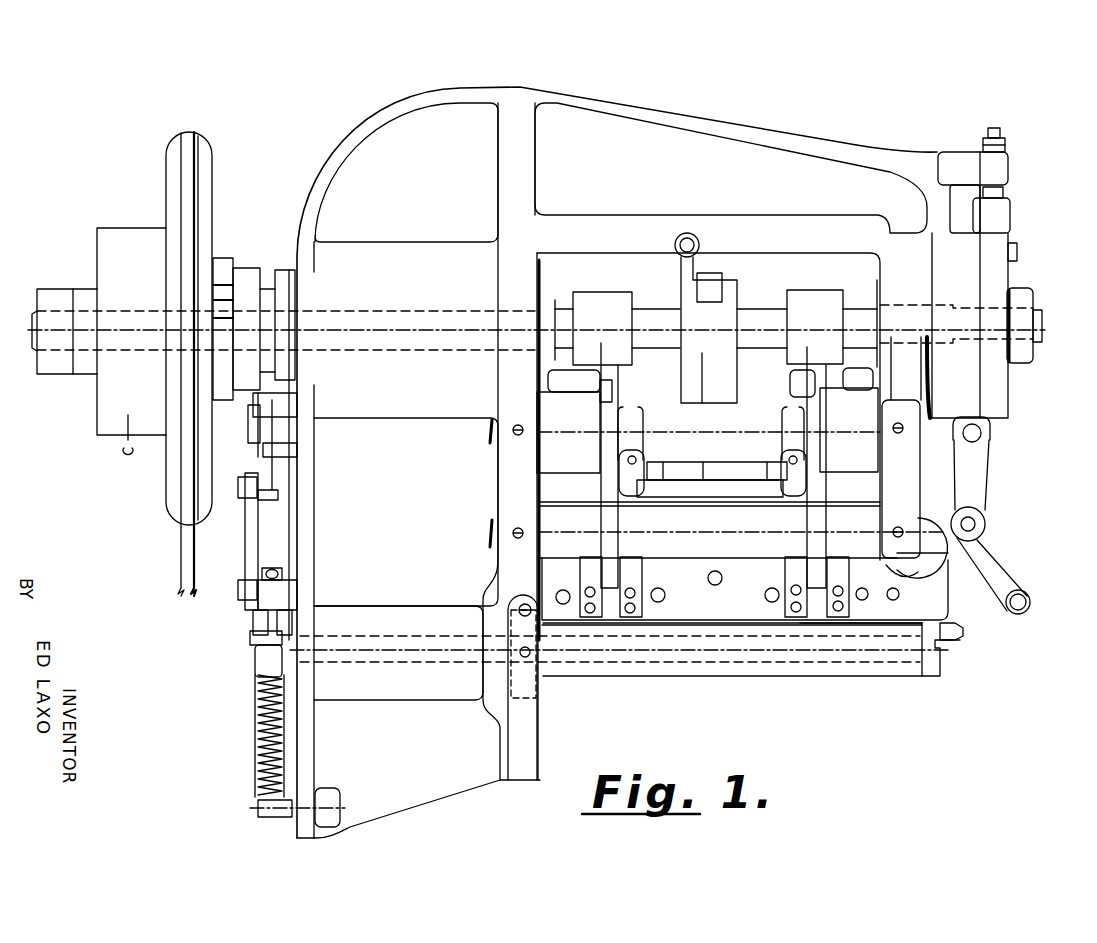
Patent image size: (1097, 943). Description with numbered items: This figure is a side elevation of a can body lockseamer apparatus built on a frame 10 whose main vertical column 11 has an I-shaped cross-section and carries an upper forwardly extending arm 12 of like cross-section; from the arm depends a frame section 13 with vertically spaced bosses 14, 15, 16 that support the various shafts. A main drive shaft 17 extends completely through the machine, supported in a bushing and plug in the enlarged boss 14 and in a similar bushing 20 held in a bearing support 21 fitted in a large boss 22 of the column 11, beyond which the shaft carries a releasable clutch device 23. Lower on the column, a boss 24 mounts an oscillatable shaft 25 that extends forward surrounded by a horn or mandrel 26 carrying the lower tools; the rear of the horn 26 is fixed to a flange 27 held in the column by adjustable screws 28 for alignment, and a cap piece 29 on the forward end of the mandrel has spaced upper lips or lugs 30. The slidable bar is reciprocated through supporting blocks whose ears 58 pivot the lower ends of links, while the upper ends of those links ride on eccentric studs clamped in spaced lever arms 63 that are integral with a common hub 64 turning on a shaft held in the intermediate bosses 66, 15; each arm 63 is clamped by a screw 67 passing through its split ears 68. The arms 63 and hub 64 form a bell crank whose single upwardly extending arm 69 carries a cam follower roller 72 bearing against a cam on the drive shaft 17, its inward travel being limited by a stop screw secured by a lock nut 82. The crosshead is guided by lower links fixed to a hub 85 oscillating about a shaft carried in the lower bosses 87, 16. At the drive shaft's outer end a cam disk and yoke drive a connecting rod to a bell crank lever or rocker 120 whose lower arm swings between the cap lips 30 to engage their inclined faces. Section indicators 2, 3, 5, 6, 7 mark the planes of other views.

The frame 10 is at (530, 88).
The main vertical column 11 is at (406, 512).
The upper forwardly extending arm 12 is at (731, 168).
The depending frame section 13 is at (975, 457).
The enlarged boss 14 is at (972, 282).
The intermediate boss 15 is at (901, 479).
The lower boss 16 is at (525, 592).
The main drive shaft 17 is at (757, 310).
The bushing 20 is at (497, 352).
The bearing support 21 is at (540, 282).
The boss 22 is at (420, 280).
The releasable clutch device 23 is at (222, 260).
The boss 24 is at (433, 690).
The oscillatable shaft 25 is at (725, 672).
The horn or mandrel 26 is at (873, 672).
The flange 27 is at (547, 688).
The adjustable screws 28 is at (523, 656).
The cap piece 29 is at (930, 676).
The upper lips or lugs 30 is at (965, 630).
The ears 58 is at (840, 582).
The lever arms 63 is at (642, 420).
The hub 64 is at (717, 454).
The intermediate boss 66 is at (518, 448).
The screw 67 is at (643, 452).
The ears 68 is at (652, 480).
The upwardly extending arm 69 is at (722, 358).
The cam follower roller 72 is at (718, 276).
The lock nut 82 is at (693, 238).
The hub 85 is at (741, 530).
The lower boss 87 is at (518, 504).
The bell crank lever or rocker 120 is at (1003, 562).
The section line 2 is at (843, 137).
The section line 3 is at (635, 522).
The section line 5 is at (288, 185).
The section line 6 is at (840, 510).
The section line 7 / pulley 7 is at (230, 180).